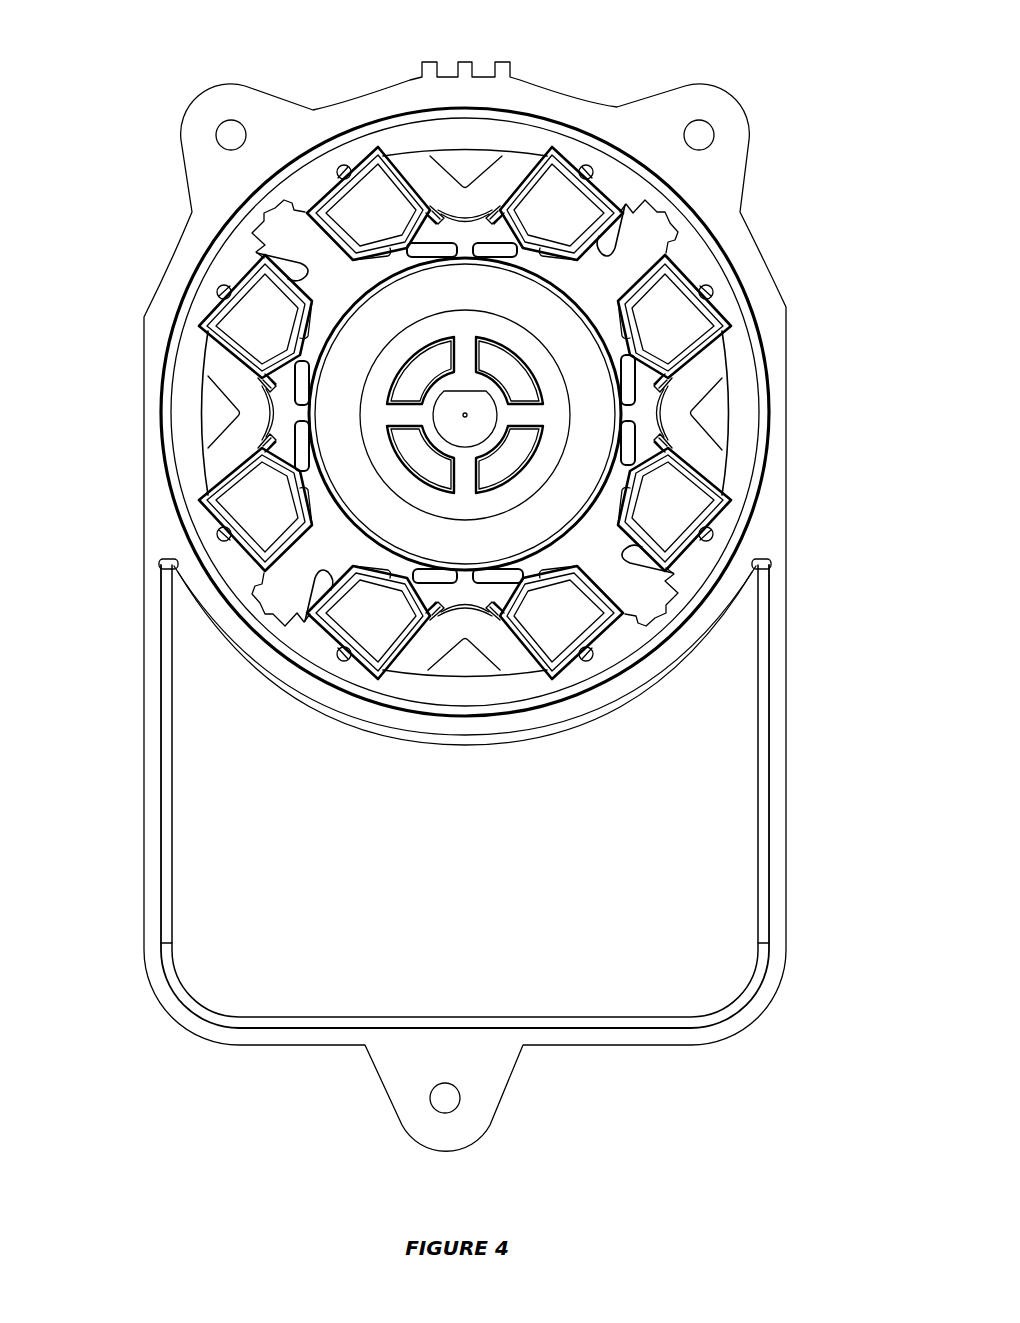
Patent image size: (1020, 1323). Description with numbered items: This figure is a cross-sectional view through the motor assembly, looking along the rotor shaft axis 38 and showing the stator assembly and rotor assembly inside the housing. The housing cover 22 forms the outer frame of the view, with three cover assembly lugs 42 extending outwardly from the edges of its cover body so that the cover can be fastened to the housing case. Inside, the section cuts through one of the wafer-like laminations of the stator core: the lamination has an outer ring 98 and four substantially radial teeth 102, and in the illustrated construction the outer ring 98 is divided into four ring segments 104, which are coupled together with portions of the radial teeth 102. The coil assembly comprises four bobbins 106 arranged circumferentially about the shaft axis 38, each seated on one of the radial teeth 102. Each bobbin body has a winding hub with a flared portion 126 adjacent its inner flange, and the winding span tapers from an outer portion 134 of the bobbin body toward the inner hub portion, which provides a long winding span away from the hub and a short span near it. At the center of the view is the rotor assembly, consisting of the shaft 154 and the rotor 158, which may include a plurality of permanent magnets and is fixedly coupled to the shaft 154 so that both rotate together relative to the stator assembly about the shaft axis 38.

The housing cover 22 is at (778, 803).
The rotor shaft axis 38 is at (467, 414).
The cover assembly lugs 42 is at (212, 112).
The outer ring 98 is at (513, 133).
The radial teeth 102 is at (298, 243).
The ring segments 104 is at (471, 133).
The bobbins 106 is at (678, 275).
The flared portion 126 is at (388, 268).
The outer portion 134 is at (607, 257).
The shaft 154 is at (477, 425).
The rotor 158 is at (415, 530).